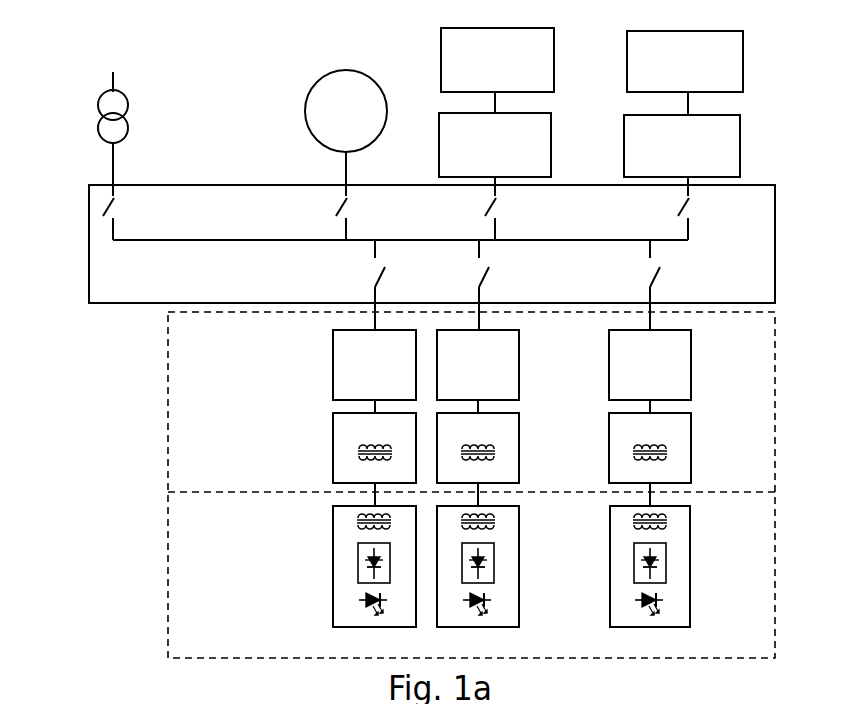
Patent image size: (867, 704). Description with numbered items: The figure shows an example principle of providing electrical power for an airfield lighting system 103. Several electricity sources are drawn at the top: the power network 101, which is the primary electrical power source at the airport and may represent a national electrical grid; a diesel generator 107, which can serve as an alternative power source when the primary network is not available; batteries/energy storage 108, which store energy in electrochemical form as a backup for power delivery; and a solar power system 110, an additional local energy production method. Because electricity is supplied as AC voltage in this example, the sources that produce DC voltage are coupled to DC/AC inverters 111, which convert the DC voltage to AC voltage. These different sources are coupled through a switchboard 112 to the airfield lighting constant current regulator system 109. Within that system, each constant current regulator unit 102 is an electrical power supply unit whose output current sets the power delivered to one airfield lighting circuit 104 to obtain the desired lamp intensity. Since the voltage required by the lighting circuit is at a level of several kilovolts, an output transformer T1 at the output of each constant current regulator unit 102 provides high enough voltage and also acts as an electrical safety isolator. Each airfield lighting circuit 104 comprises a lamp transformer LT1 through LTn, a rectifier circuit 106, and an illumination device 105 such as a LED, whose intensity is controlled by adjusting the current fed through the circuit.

The power network 101 is at (112, 81).
The constant current regulator unit 102 is at (333, 354).
The airfield lighting system 103 is at (168, 575).
The airfield lighting circuit 104 is at (333, 516).
The illumination device 105 is at (358, 601).
The rectifier circuit 106 is at (358, 564).
The diesel generator 107 is at (305, 109).
The batteries/energy storage 108 is at (743, 61).
The airfield lighting constant current regulator system 109 is at (259, 34).
The solar power system 110 is at (441, 58).
The DC/AC inverter 111 is at (439, 156).
The switchboard 112 is at (89, 266).
The output transformer T1 is at (333, 438).
The lamp transformer LT1 is at (355, 527).
The lamp transformer LTn is at (635, 527).